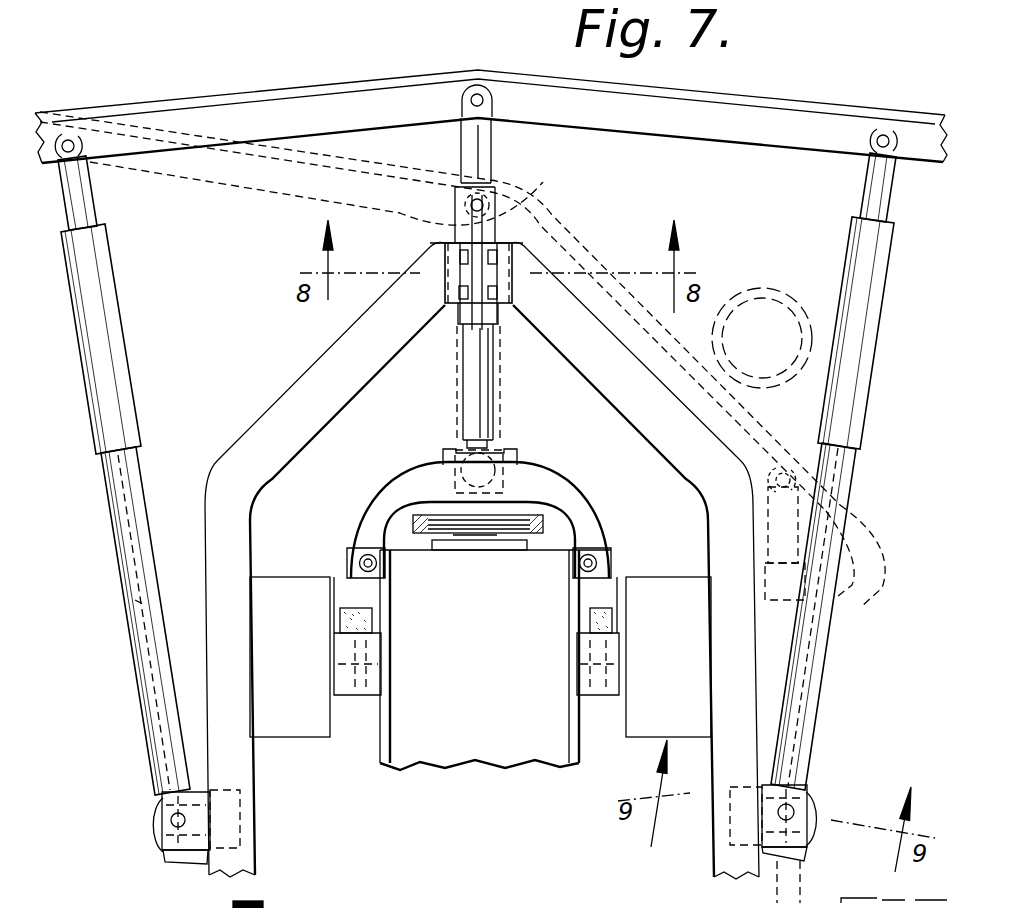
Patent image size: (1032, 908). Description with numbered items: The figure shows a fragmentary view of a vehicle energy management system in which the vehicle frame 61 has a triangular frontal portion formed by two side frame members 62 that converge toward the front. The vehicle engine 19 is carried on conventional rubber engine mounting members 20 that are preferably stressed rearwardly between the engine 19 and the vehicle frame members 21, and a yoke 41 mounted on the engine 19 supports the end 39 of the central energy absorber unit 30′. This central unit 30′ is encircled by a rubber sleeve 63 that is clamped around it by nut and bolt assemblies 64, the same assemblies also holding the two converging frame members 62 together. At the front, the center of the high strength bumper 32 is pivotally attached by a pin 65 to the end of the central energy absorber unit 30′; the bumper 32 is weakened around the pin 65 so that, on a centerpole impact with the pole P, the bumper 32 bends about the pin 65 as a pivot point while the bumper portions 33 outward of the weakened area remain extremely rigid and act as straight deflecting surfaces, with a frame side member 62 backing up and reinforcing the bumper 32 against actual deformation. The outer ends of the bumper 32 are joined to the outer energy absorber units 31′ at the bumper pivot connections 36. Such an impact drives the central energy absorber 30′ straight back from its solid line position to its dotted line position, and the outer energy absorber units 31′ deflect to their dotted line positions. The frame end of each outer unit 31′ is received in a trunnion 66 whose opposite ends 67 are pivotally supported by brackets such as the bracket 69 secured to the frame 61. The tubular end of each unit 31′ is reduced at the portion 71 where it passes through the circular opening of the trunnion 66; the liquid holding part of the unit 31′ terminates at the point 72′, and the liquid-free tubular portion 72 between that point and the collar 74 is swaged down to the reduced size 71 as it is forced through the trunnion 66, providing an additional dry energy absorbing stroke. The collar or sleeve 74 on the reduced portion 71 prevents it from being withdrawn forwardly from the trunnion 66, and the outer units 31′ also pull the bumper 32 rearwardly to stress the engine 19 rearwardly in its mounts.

The vehicle engine 19 is at (475, 763).
The rubber engine mounting members 20 is at (384, 615).
The vehicle frame members 21 is at (340, 620).
The central energy absorber unit 30′ is at (460, 320).
The outer energy absorber unit 31′ is at (112, 370).
The bumper 32 is at (358, 68).
The beam flanges 33 is at (778, 99).
The pivot pins 36 is at (70, 138).
The end of the energy absorber unit 39 is at (495, 468).
The yoke 41 is at (370, 522).
The vehicle frame 61 is at (240, 766).
The side frame members 62 is at (312, 372).
The rubber sleeve 63 is at (572, 223).
The nut and bolt assemblies 64 is at (460, 290).
The pin 65 is at (478, 92).
The trunnion 66 is at (153, 832).
The trunnion ends 67 is at (171, 818).
The bracket 69 is at (162, 796).
The reduced tubular end portion 71 is at (212, 828).
The tubular portion 72 is at (147, 714).
The termination of liquid holding portion 72′ is at (137, 610).
The collar 74 is at (165, 856).
The pole P is at (775, 292).